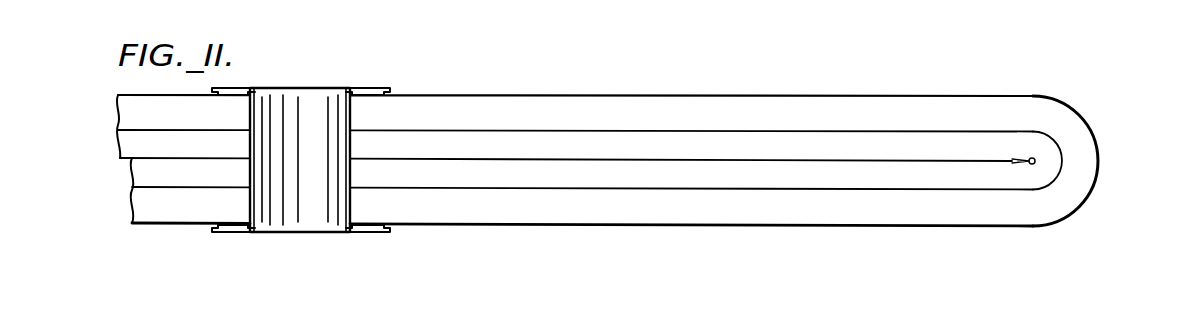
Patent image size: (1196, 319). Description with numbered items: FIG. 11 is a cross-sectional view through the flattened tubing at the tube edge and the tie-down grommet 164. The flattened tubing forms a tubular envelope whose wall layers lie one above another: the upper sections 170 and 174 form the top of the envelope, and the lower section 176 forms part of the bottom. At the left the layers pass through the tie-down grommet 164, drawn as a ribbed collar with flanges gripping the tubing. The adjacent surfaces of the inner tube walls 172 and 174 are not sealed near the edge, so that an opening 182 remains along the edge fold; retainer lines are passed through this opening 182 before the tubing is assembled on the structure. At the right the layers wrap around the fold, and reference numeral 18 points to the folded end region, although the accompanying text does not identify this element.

The probe tip / U-shaped end 18 is at (1100, 146).
The tie-down grommet 164 is at (372, 88).
The upper section 170 is at (508, 110).
The inner tube wall 172 is at (587, 148).
The upper section 174 is at (700, 177).
The lower section 176 is at (818, 208).
The opening 182 is at (1032, 158).